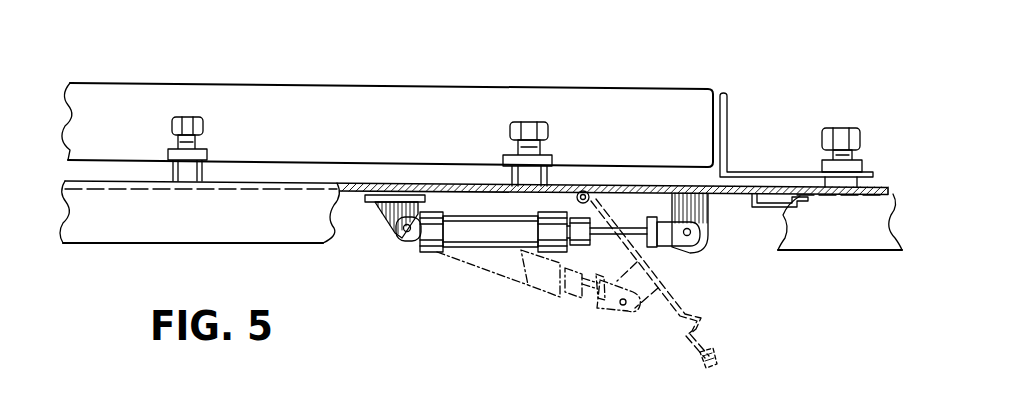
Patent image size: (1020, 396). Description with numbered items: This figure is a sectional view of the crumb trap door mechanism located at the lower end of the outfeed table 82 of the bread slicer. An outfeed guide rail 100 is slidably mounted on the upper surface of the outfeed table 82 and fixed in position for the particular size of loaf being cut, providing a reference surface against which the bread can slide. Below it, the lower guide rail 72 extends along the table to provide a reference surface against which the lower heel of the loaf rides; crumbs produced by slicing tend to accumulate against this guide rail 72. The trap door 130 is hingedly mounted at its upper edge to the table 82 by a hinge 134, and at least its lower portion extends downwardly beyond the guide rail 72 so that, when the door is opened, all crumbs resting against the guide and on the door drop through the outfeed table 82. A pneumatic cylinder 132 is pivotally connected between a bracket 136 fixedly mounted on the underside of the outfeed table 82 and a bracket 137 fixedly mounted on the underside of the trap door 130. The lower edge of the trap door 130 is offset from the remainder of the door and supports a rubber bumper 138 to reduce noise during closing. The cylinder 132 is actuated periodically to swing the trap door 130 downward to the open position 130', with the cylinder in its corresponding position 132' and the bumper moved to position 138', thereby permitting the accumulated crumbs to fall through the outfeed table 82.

The guide rail 72 is at (728, 123).
The outfeed table 82 is at (358, 188).
The outfeed guide rail 100 is at (398, 93).
The trap door 130 is at (766, 166).
The lowered trap door position 130' is at (684, 278).
The pneumatic cylinder 132 is at (560, 275).
The pneumatic cylinder in lowered-door position 132' is at (516, 285).
The hinge 134 is at (586, 190).
The bracket 136 is at (377, 211).
The bracket 137 is at (710, 213).
The rubber bumper 138 is at (840, 244).
The rubber bumper in lowered-door position 138' is at (750, 348).